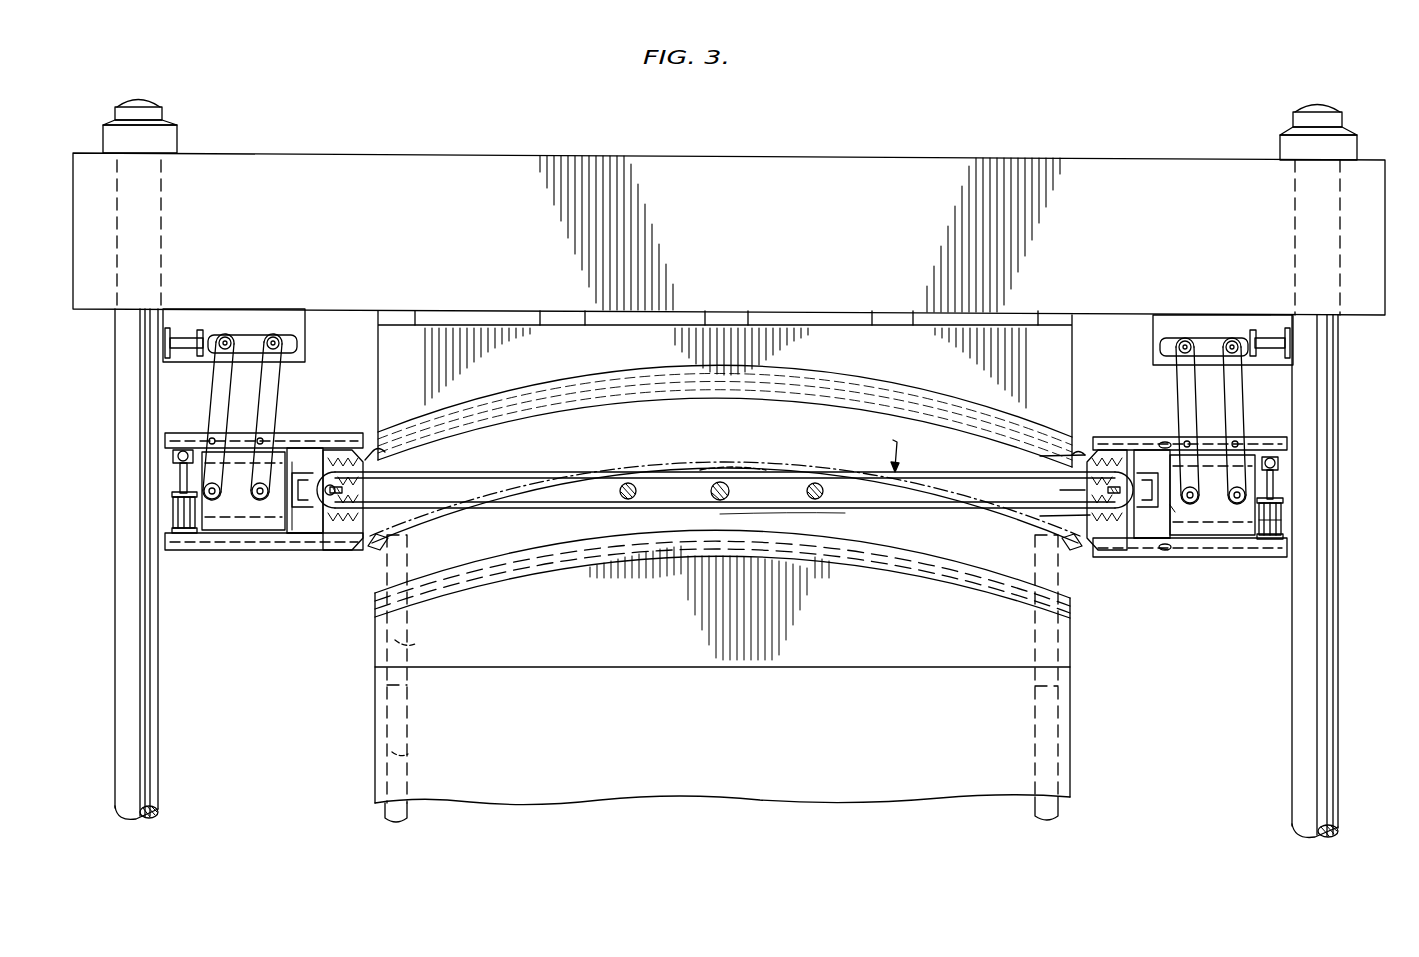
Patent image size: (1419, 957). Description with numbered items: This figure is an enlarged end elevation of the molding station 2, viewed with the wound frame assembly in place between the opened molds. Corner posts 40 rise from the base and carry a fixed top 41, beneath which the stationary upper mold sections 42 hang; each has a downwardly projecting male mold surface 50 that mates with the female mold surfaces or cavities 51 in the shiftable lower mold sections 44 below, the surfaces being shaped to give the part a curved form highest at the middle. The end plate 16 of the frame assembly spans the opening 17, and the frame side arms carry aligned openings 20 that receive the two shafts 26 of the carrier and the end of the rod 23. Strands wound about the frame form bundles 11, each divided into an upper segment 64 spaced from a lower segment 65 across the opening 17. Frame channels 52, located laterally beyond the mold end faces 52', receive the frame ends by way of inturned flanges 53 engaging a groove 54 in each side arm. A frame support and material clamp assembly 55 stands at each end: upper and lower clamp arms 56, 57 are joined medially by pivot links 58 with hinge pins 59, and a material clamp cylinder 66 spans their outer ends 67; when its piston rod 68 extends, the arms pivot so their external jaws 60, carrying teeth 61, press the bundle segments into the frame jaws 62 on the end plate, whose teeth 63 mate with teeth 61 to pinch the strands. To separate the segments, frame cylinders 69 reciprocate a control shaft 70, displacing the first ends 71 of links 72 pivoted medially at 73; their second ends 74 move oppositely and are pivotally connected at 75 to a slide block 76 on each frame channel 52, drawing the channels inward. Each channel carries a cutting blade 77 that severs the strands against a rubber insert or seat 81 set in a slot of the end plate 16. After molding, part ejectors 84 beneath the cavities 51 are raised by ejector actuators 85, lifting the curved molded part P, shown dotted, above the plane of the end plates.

The molding station 2 is at (384, 152).
The fixed top 41 is at (905, 172).
The corner posts 40 is at (148, 700).
The upper mold sections 42 is at (1040, 337).
The male mold surface 50 is at (880, 382).
The lower mold sections 44 is at (1005, 638).
The female mold surfaces 51 is at (690, 540).
The end faces 52' is at (725, 678).
The molded part P is at (795, 460).
The end plate 16 is at (362, 490).
The clear opening 17 is at (896, 492).
The openings 20 is at (647, 482).
The rod 23 is at (724, 482).
The shafts 26 is at (619, 491).
The bundles 11 is at (893, 440).
The external jaw 60 is at (385, 452).
The teeth 61 is at (1085, 455).
The frame jaws 62 is at (1085, 490).
The teeth 63 is at (1090, 515).
The upper segment 64 is at (768, 470).
The lower segment 65 is at (843, 513).
The frame support and material clamp assembly 55 is at (742, 433).
The upper clamp arm 56 is at (190, 442).
The frame channels 52 is at (729, 465).
The inturned flanges 53 is at (318, 466).
The groove 54 is at (340, 537).
The lower clamp arm 57 is at (305, 549).
The pivot links 58 is at (1172, 513).
The hinge pin 59 is at (1165, 551).
The rubber insert or seat 81 is at (330, 472).
The cutting blade 77 is at (290, 496).
The slide block 76 is at (213, 505).
The second ends 74 is at (258, 497).
The pivotal connection 75 is at (1237, 498).
The links 72 is at (262, 406).
The medial pivot 73 is at (1235, 445).
The control shaft 70 is at (250, 335).
The first ends 71 is at (225, 340).
The frame cylinders 69 is at (180, 338).
The outer ends 67 is at (1255, 440).
The cylinder piston rod 68 is at (1278, 492).
The material clamp cylinder 66 is at (1285, 520).
The part ejectors 84 is at (415, 644).
The ejector actuators 85 is at (405, 754).